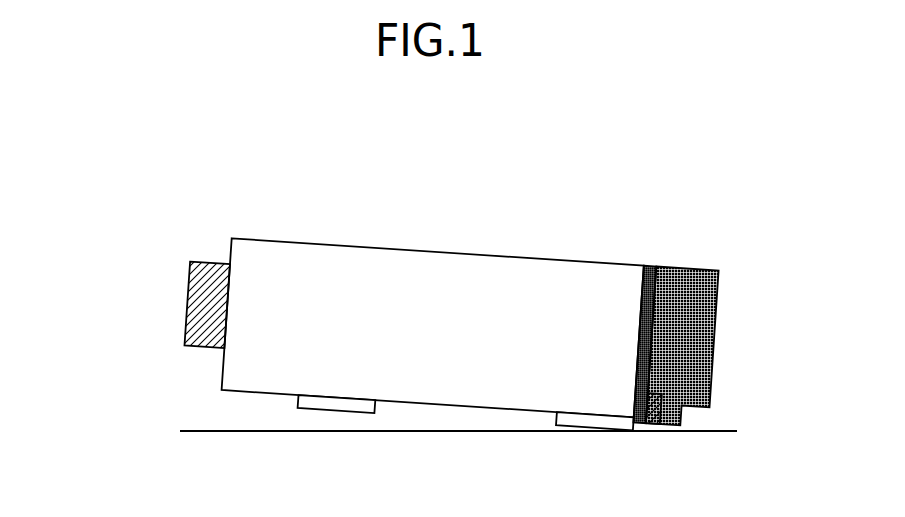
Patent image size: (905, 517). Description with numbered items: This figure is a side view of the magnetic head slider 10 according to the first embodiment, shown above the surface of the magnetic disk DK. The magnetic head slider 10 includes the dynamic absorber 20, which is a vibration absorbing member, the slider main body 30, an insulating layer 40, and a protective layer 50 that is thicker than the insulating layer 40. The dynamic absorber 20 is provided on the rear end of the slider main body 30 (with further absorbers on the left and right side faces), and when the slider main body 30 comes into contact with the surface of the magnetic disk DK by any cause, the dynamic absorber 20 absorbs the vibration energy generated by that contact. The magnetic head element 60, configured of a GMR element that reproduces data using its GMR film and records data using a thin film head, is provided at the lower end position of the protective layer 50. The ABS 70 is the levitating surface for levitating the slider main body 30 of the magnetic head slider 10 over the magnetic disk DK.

The magnetic head slider 10 is at (538, 176).
The dynamic absorber 20 is at (212, 262).
The slider main body 30 is at (336, 243).
The insulating layer 40 is at (648, 268).
The protective layer 50 is at (720, 273).
The magnetic head element 60 is at (650, 427).
The ABS (air bearing surface) 70 is at (312, 411).
The magnetic disk DK is at (195, 431).